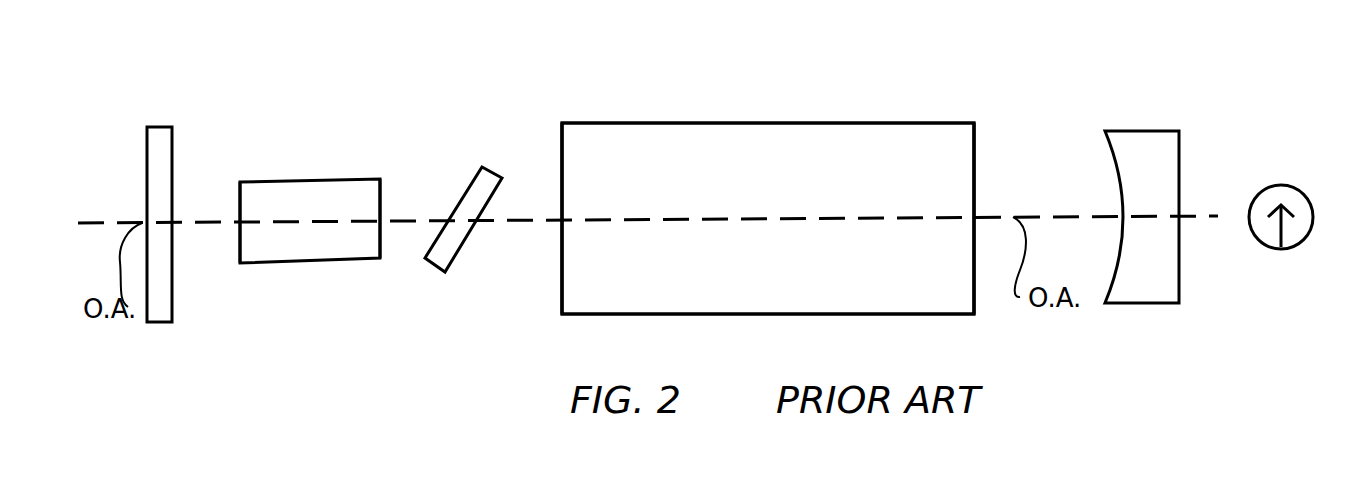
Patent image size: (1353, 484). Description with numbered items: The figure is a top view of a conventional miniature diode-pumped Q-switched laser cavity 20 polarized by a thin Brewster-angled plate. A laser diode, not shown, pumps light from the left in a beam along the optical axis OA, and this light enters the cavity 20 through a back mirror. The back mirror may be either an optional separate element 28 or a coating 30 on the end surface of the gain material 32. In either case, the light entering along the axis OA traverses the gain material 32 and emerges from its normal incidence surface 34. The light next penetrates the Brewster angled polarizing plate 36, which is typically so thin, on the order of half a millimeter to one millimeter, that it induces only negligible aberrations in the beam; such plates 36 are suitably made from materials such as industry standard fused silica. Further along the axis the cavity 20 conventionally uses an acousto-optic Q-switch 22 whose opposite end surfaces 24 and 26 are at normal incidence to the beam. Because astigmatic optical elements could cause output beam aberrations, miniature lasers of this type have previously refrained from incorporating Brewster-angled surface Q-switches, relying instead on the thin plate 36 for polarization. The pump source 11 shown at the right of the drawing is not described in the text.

The pump light source 11 is at (1302, 187).
The laser cavity 20 is at (522, 300).
The acousto-optic Q-switch 22 is at (785, 145).
The end surface 24 is at (562, 150).
The end surface 26 is at (975, 167).
The separate back mirror element 28 is at (156, 132).
The coating 30 is at (237, 193).
The gain material 32 is at (317, 193).
The normal incidence surface 34 is at (378, 190).
The Brewster angled polarizing plate 36 is at (488, 183).